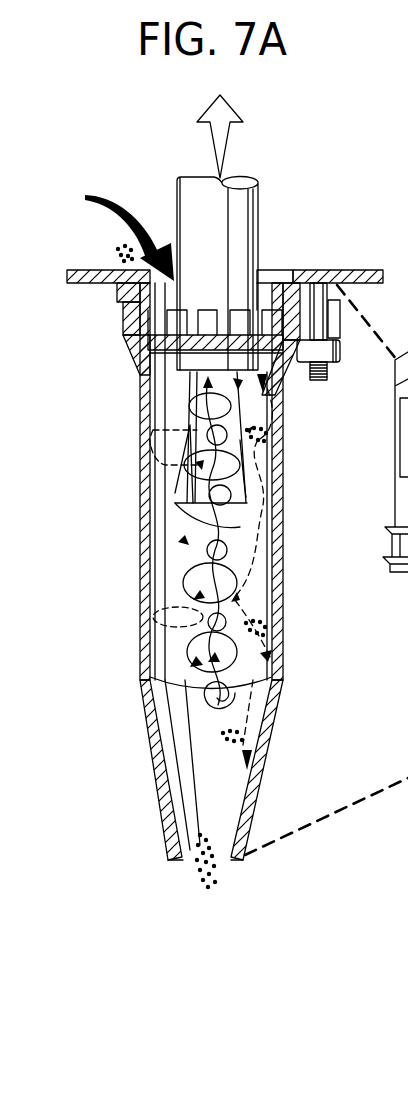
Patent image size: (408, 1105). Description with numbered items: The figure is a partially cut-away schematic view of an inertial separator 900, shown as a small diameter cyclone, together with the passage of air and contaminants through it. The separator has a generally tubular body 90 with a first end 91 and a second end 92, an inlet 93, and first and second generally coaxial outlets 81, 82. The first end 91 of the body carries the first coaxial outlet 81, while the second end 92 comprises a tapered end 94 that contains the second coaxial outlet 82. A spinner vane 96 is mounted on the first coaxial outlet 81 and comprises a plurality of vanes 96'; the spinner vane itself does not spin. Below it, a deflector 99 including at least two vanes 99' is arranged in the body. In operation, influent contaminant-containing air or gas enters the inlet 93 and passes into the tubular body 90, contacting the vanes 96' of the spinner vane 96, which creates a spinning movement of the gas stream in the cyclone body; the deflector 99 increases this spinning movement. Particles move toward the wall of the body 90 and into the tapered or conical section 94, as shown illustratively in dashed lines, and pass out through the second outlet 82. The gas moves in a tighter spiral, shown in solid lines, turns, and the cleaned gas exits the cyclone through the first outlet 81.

The first coaxial outlet 81 is at (240, 186).
The second coaxial outlet 82 is at (190, 870).
The tubular body 90 is at (143, 556).
The first end 91 is at (270, 263).
The second end 92 is at (183, 847).
The inlet 93 is at (150, 280).
The tapered end 94 is at (163, 777).
The spinner vane 96 is at (169, 323).
The vanes 96' is at (169, 354).
The deflector 99 is at (151, 437).
The vanes 99' is at (147, 492).
The inertial separator 900 is at (112, 652).